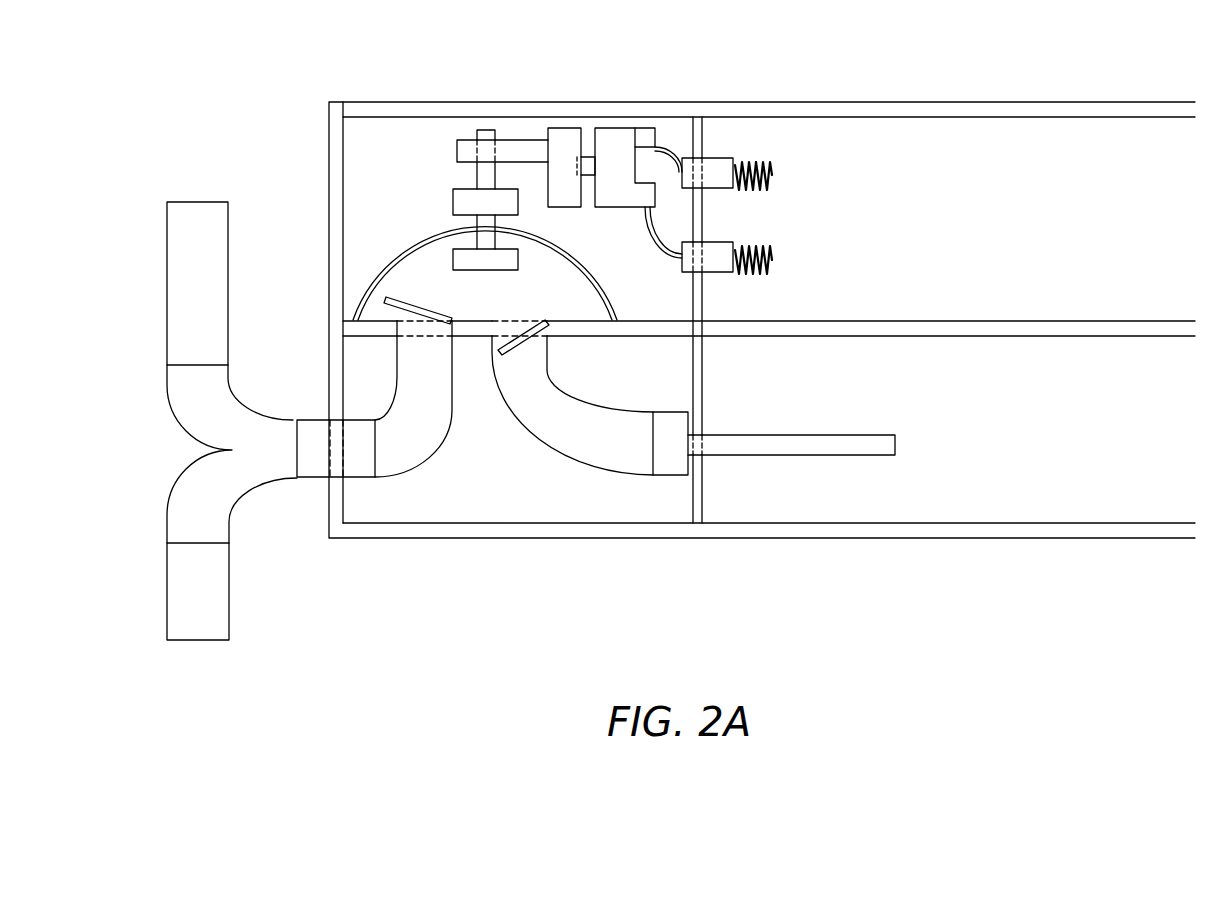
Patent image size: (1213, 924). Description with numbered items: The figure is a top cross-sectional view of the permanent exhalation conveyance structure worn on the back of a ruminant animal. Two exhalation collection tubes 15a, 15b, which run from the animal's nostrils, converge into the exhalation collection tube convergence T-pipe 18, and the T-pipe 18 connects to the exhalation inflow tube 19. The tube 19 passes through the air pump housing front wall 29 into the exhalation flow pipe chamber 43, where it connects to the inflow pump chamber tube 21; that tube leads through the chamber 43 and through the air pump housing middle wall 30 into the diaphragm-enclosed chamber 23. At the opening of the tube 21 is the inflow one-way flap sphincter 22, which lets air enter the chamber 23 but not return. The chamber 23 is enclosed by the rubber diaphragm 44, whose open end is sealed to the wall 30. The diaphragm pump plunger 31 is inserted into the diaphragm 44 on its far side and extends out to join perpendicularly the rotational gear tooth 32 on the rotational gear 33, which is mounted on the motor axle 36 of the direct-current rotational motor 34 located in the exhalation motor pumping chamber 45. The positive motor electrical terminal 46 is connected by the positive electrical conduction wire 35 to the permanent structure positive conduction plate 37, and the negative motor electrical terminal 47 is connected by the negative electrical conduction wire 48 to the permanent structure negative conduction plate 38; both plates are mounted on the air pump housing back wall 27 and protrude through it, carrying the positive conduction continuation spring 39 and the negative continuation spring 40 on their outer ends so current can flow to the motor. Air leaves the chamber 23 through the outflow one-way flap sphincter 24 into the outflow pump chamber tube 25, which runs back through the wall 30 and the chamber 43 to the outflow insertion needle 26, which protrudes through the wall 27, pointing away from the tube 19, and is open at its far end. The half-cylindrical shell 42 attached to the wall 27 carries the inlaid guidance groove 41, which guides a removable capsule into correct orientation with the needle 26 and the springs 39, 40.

The exhalation collection tube 15a is at (200, 220).
The exhalation collection tube 15b is at (203, 622).
The exhalation collection tube convergence T-pipe 18 is at (232, 493).
The exhalation inflow tube 19 is at (317, 463).
The inflow pump chamber tube 21 is at (402, 455).
The inflow one-way flap sphincter 22 is at (388, 297).
The diaphragm-enclosed chamber 23 is at (418, 258).
The outflow one-way flap sphincter 24 is at (523, 345).
The outflow pump chamber tube 25 is at (513, 393).
The outflow insertion needle 26 is at (753, 445).
The air pump housing back wall 27 is at (697, 133).
The air pump housing front wall 29 is at (333, 148).
The air pump housing middle wall 30 is at (347, 335).
The diaphragm pump plunger 31 is at (465, 200).
The rotational gear tooth 32 is at (468, 150).
The rotational gear 33 is at (560, 140).
The direct-current rotational motor 34 is at (615, 150).
The positive electrical conduction wire 35 is at (688, 132).
The motor axle 36 is at (586, 165).
The permanent structure positive conduction plate 37 is at (722, 168).
The permanent structure negative conduction plate 38 is at (720, 272).
The positive conduction continuation spring 39 is at (772, 165).
The negative continuation spring 40 is at (772, 262).
The inlaid guidance groove 41 is at (1012, 335).
The half-cylindrical shell 42 is at (957, 125).
The exhalation flow pipe chamber 43 is at (482, 505).
The rubber diaphragm 44 is at (384, 272).
The exhalation motor pumping chamber 45 is at (363, 150).
The positive motor electrical terminal 46 is at (645, 137).
The negative motor electrical terminal 47 is at (667, 155).
The negative electrical conduction wire 48 is at (640, 258).